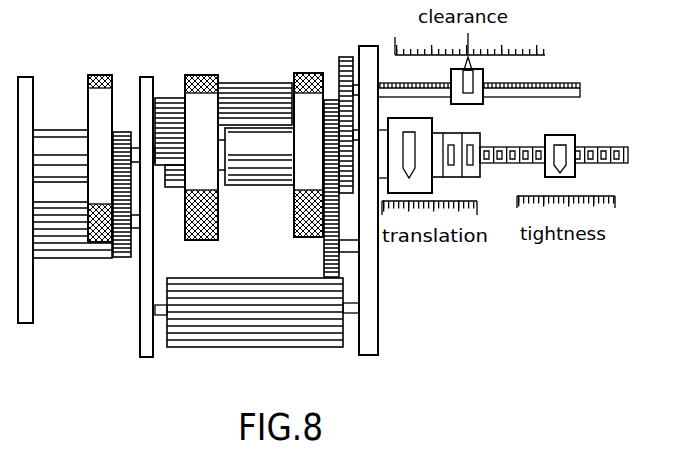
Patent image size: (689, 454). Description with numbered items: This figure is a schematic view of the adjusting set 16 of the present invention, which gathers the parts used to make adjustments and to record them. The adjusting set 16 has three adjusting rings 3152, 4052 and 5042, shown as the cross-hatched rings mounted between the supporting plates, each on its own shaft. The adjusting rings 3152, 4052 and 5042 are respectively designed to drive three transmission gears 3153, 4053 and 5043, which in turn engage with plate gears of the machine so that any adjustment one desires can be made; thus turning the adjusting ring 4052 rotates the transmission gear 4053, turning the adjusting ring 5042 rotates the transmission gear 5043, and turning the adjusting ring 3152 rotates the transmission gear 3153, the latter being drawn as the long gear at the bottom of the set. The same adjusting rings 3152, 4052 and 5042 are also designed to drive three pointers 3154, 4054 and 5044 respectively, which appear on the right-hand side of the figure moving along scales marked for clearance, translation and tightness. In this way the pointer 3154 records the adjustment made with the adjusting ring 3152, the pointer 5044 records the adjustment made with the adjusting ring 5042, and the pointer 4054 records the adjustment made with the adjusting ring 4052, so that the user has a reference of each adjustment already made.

The adjusting set 16 is at (379, 332).
The adjusting ring 4052 is at (98, 77).
The transmission gear 4053 is at (65, 259).
The adjusting ring 5042 is at (200, 75).
The transmission gear 5043 is at (257, 83).
The adjusting ring 3152 is at (312, 73).
The transmission gear 3153 is at (307, 340).
The pointer 3154 is at (483, 77).
The pointer 5044 is at (420, 128).
The pointer 4054 is at (575, 172).